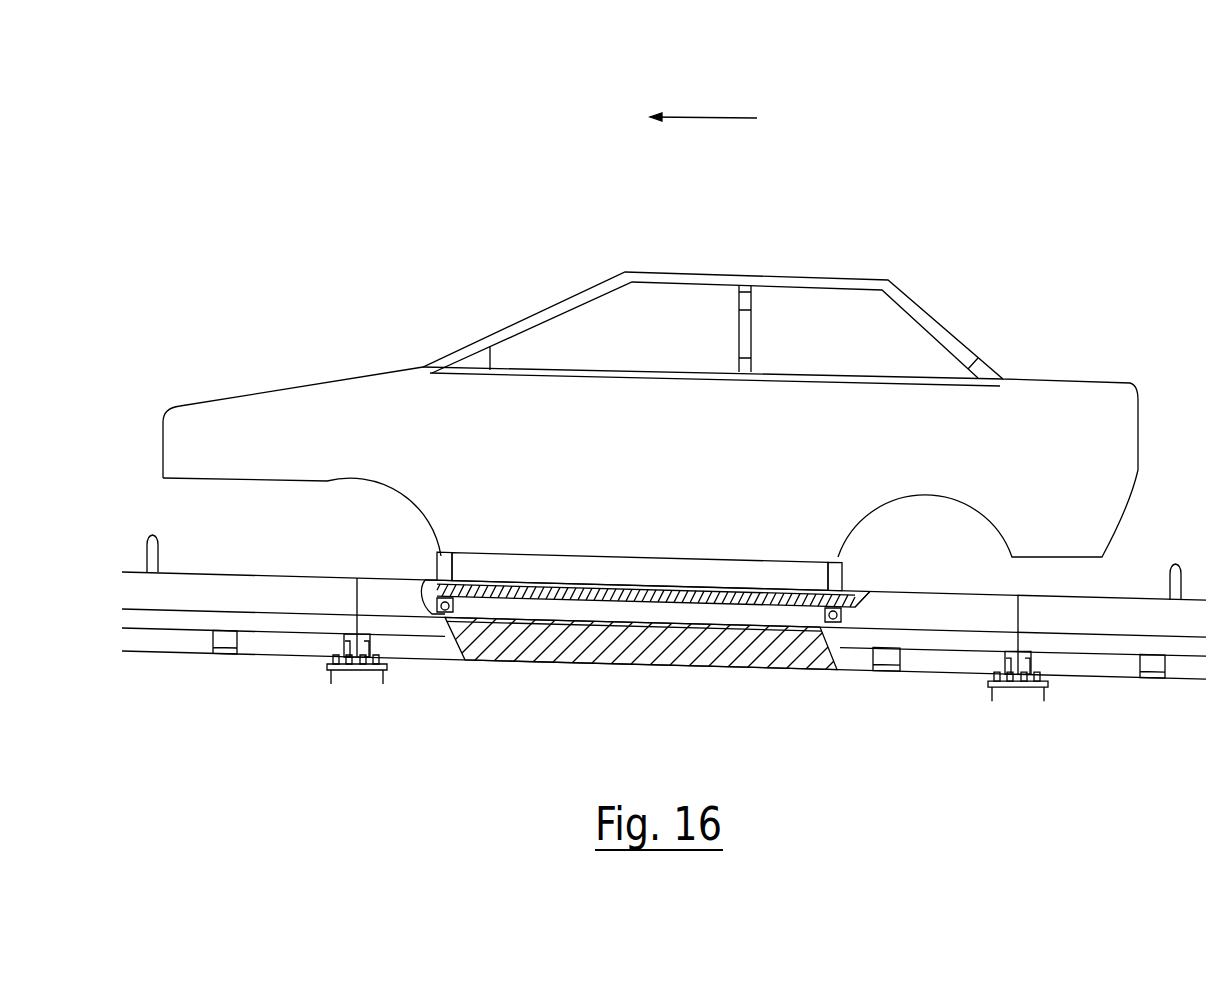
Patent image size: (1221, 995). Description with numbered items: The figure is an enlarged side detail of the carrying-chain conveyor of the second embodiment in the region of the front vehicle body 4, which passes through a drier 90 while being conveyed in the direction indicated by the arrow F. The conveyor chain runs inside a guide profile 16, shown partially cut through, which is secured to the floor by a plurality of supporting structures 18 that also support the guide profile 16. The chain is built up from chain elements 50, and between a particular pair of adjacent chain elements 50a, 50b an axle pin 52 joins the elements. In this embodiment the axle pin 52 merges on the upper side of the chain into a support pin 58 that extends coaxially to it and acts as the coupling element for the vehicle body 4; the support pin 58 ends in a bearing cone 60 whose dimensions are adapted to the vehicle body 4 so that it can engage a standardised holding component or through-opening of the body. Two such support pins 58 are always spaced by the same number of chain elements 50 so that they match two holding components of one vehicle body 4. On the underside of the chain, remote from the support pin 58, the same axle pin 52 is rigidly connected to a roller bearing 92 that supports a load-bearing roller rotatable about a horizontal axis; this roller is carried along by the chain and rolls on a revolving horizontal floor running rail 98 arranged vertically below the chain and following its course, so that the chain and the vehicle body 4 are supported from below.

The vehicle body 4 is at (288, 403).
The arrow indicating conveying direction F is at (713, 117).
The guide profile 16 is at (178, 594).
The supporting structure 18 is at (348, 676).
The chain element 50 is at (670, 586).
The chain element 50a is at (447, 608).
The chain element 50b is at (460, 600).
The axle pin 52 is at (462, 554).
The support pin 58 is at (163, 557).
The bearing cone 60 is at (152, 539).
The drier 90 is at (450, 613).
The roller bearing 92 is at (435, 588).
The floor running rail 98 is at (632, 650).